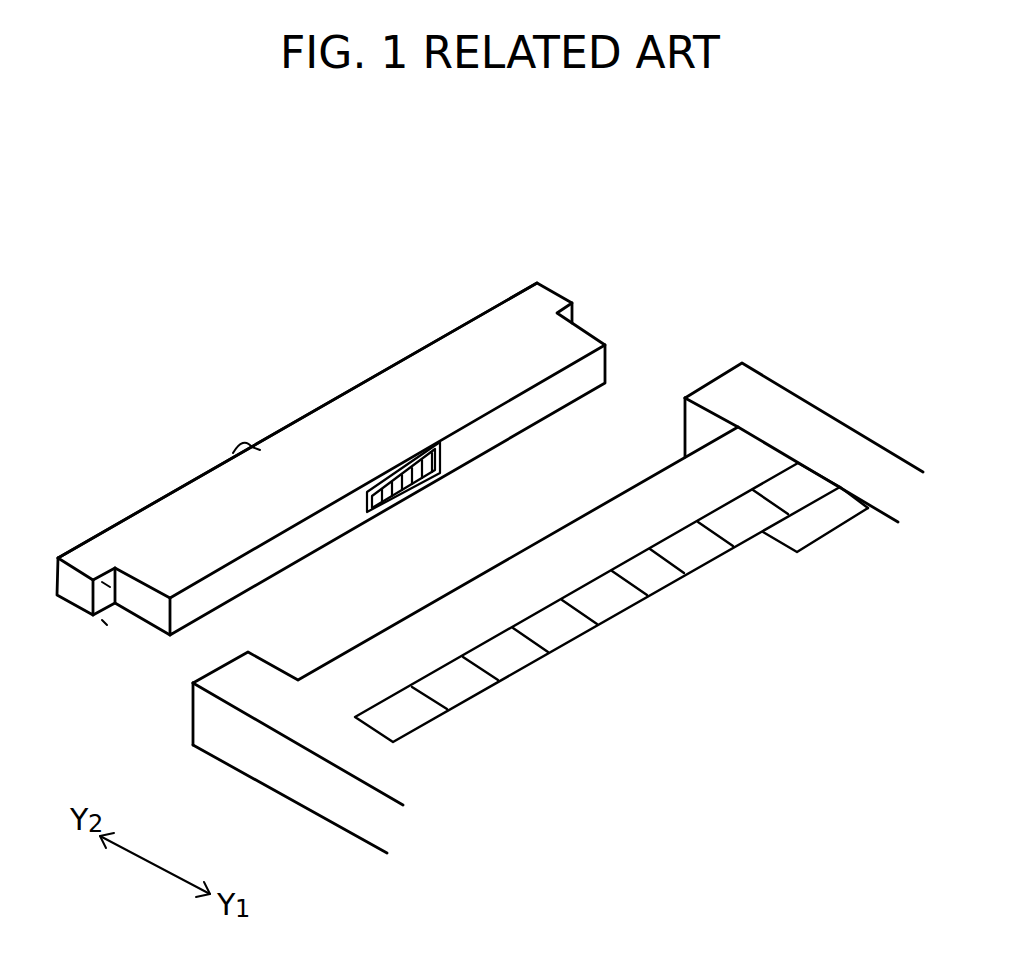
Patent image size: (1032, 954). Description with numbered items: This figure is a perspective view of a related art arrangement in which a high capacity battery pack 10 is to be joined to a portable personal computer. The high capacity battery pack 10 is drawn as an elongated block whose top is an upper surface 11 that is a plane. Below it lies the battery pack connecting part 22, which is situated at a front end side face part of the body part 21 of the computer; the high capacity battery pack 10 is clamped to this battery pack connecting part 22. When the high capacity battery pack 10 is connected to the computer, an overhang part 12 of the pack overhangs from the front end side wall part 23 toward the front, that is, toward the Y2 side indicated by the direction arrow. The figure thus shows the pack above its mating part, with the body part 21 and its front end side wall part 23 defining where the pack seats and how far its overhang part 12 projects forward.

The high capacity battery pack 10 is at (467, 303).
The upper surface 11 is at (357, 424).
The overhang part 12 is at (263, 476).
The body part 21 is at (240, 757).
The battery pack connecting part 22 is at (643, 430).
The front end side wall part 23 is at (203, 673).